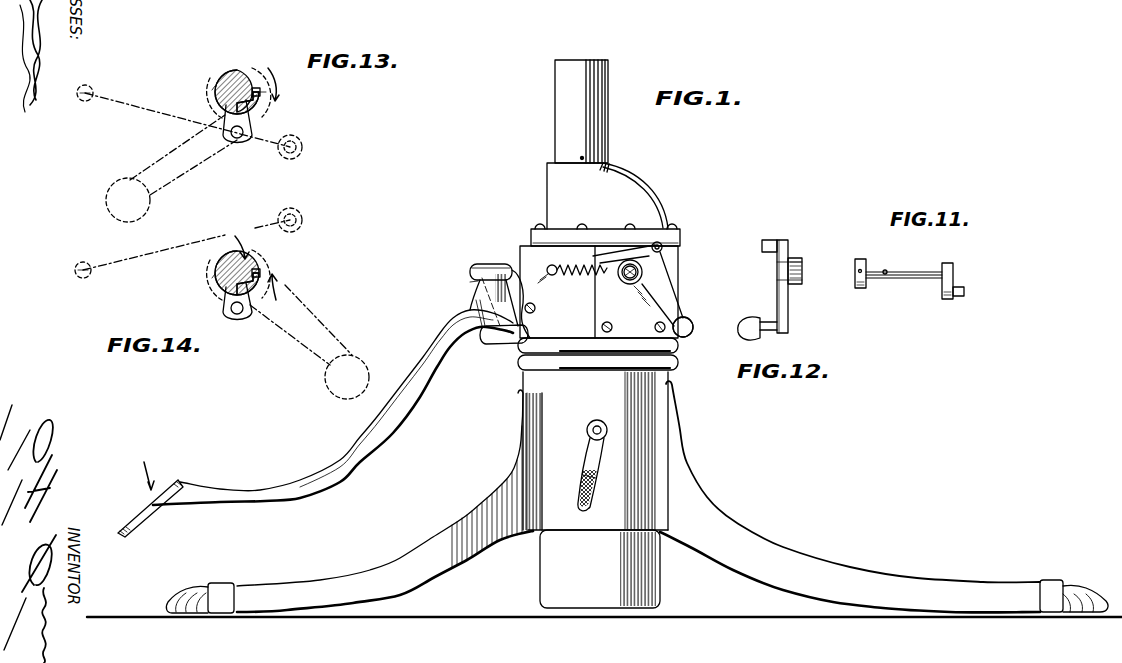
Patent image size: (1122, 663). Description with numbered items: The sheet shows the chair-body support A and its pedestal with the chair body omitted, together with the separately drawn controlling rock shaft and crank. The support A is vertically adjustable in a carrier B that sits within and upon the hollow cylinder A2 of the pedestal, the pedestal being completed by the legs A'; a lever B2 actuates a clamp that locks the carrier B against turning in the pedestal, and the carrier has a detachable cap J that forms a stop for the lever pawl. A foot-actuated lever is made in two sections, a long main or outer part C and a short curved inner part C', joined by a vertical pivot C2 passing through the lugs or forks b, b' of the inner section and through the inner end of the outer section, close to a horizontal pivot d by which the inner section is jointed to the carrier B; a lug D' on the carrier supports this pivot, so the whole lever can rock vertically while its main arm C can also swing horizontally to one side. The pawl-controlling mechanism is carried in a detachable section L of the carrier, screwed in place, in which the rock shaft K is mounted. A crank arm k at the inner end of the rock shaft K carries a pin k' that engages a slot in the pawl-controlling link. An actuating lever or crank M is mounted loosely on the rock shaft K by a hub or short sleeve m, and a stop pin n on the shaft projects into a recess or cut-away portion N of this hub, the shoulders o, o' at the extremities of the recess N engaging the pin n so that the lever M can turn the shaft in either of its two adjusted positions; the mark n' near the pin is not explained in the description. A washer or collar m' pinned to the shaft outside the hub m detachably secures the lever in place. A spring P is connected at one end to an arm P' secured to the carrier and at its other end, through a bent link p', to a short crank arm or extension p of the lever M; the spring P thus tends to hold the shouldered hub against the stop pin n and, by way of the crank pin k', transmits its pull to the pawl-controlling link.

In FIG. 1, the support A is at (560, 111).
In FIG. 1, the legs A' is at (637, 497).
In FIG. 1, the hollow cylinder A2 is at (592, 452).
In FIG. 1, the carrier B is at (598, 427).
In FIG. 1, the lever B2 is at (590, 470).
In FIG. 1, the main or outer part of foot-actuated lever C is at (315, 423).
In FIG. 1, the short curved inner part of foot-actuated lever C' is at (500, 285).
In FIG. 1, the vertical pivot C2 is at (470, 266).
In FIG. 1, the lug D' is at (488, 348).
In FIG. 1, the detachable cap J is at (607, 196).
In FIG. 1, the detachable section of support carrier L is at (643, 291).
In FIG. 1, the spring P is at (605, 259).
In FIG. 1, the arm P' is at (566, 269).
In FIG. 1, the lug or fork b is at (475, 276).
In FIG. 1, the lug or fork b' is at (495, 349).
In FIG. 1, the horizontal pivot d is at (535, 302).
In FIG. 1, the crank arm or extension p is at (685, 253).
In FIG. 12, the crank arm or extension p is at (783, 238).
In FIG. 13, the crank arm or extension p is at (199, 122).
In FIG. 14, the crank arm or extension p is at (198, 241).
In FIG. 1, the bent link p' is at (644, 230).
In FIG. 12, the hub or short sleeve m is at (797, 281).
In FIG. 13, the hub or short sleeve m is at (187, 80).
In FIG. 14, the hub or short sleeve m is at (201, 278).
In FIG. 1, the washer or collar m' is at (666, 278).
In FIG. 1, the actuating lever or crank M is at (733, 305).
In FIG. 12, the actuating lever or crank M is at (750, 323).
In FIG. 13, the actuating lever or crank M is at (112, 194).
In FIG. 14, the actuating lever or crank M is at (332, 395).
In FIG. 12, the recess or cut-away portion N is at (803, 268).
In FIG. 13, the recess or cut-away portion N is at (255, 112).
In FIG. 14, the recess or cut-away portion N is at (275, 258).
In FIG. 11, the rock shaft K is at (925, 260).
In FIG. 13, the rock shaft K is at (236, 72).
In FIG. 14, the rock shaft K is at (238, 262).
In FIG. 11, the crank arm k is at (961, 280).
In FIG. 11, the pin k' is at (975, 292).
In FIG. 11, the stop pin n is at (888, 284).
In FIG. 13, the stop pin n is at (284, 92).
In FIG. 14, the pin n' is at (269, 276).
In FIG. 13, the shoulder o is at (237, 121).
In FIG. 14, the shoulder o is at (256, 301).
In FIG. 13, the shoulder o' is at (268, 77).
In FIG. 14, the shoulder o' is at (235, 239).